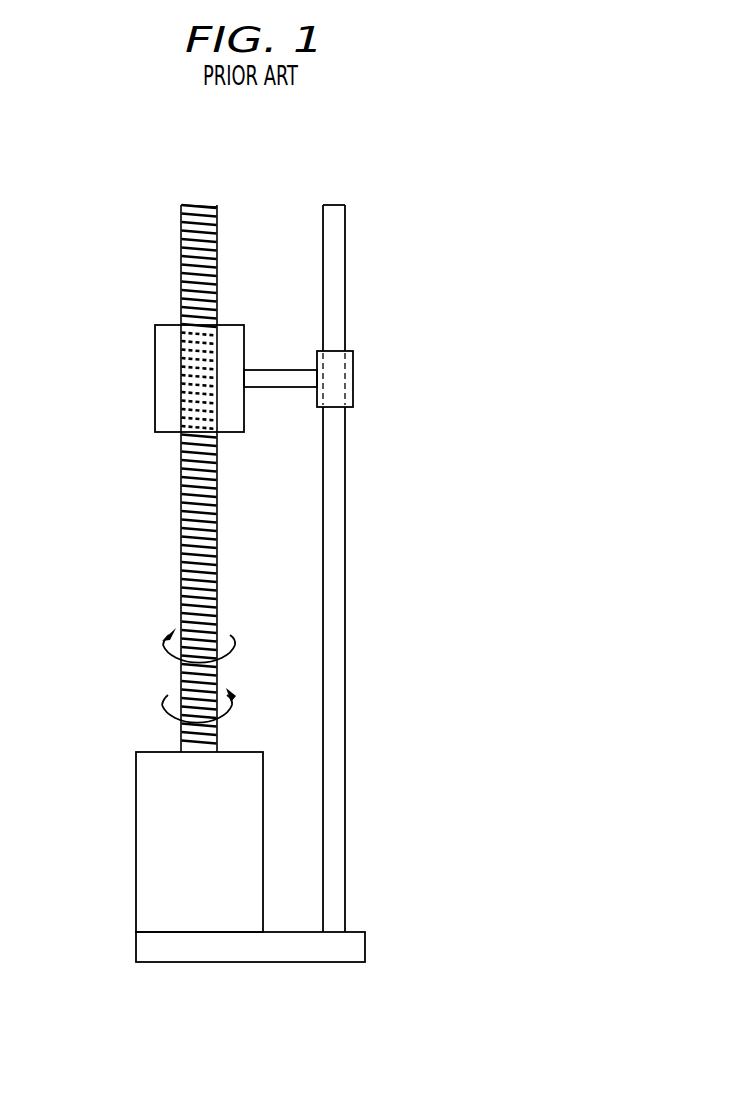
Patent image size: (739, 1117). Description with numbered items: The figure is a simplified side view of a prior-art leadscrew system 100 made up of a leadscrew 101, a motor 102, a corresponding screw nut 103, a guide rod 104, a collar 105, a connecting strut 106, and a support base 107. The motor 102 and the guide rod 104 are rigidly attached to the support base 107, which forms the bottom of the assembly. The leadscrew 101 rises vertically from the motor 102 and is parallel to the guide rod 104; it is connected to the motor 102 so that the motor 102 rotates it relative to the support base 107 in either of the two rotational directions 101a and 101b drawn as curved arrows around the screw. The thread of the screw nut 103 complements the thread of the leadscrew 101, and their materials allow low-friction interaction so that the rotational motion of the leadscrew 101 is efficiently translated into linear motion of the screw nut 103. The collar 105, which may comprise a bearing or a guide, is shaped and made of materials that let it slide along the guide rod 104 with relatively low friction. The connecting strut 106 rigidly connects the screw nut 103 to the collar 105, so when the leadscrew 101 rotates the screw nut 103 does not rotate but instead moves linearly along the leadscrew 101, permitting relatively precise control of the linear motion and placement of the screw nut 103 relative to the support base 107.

The leadscrew system 100 is at (268, 142).
The leadscrew 101 is at (181, 514).
The rotational direction 101a is at (162, 708).
The rotational direction 101b is at (164, 647).
The motor 102 is at (136, 843).
The screw nut 103 is at (144, 372).
The guide rod 104 is at (347, 242).
The collar 105 is at (355, 379).
The connecting strut 106 is at (281, 368).
The support base 107 is at (136, 946).